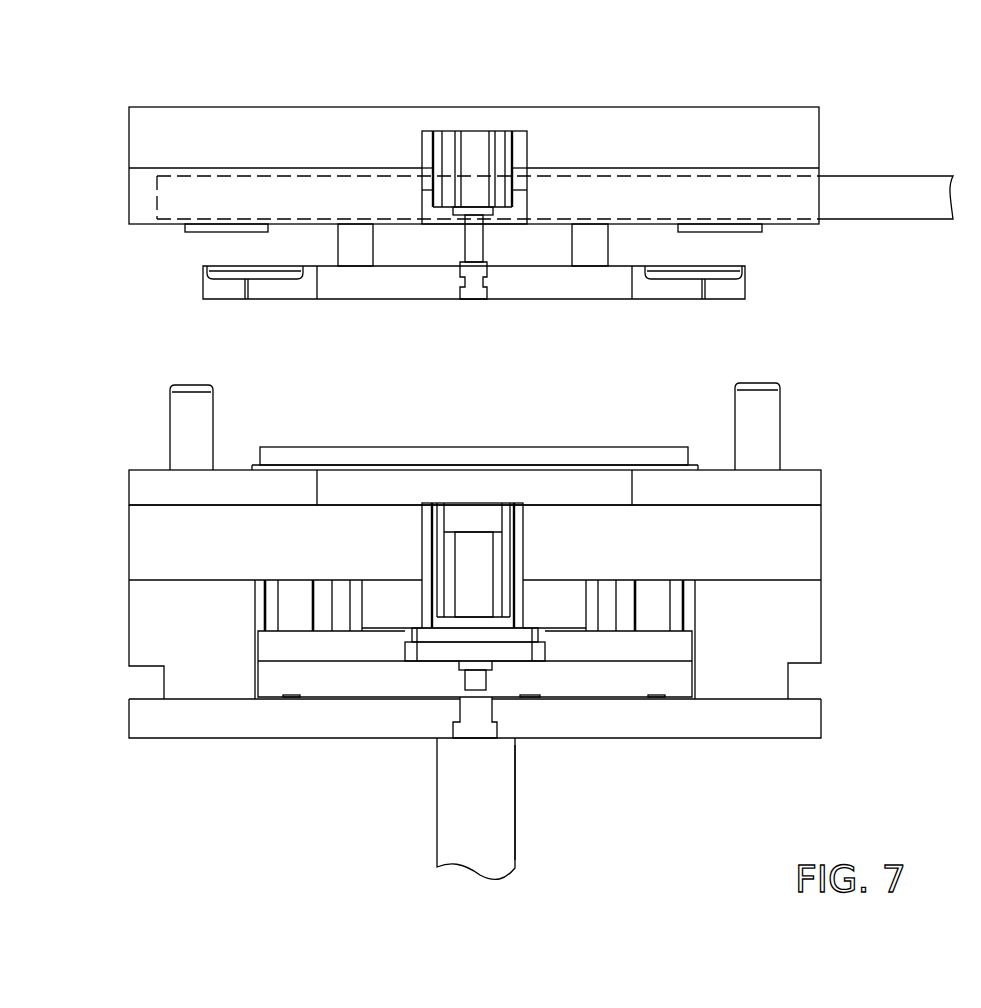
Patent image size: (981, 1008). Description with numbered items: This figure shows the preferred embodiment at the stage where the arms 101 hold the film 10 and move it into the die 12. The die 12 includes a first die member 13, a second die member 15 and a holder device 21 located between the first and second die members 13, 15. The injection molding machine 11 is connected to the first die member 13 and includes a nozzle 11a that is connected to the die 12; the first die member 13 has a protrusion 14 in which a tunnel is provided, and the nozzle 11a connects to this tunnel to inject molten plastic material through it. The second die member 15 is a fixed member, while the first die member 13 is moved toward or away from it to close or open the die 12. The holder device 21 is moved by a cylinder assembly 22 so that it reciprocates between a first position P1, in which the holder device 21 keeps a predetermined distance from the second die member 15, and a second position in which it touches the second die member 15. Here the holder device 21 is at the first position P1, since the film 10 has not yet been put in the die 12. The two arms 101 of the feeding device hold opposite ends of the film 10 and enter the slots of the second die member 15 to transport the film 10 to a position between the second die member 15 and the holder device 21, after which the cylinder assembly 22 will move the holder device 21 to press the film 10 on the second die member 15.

The film 10 is at (529, 194).
The second die member 15 is at (655, 107).
The arms 101 is at (878, 182).
The cylinder assembly 22 is at (473, 135).
The holder device 21 is at (203, 281).
The first position P1 is at (780, 258).
The die 12 is at (486, 538).
The first die member 13 is at (525, 550).
The protrusion 14 is at (553, 446).
The injection molding machine 11 is at (490, 808).
The nozzle 11a is at (493, 816).